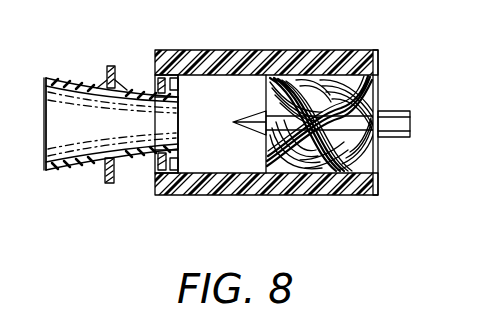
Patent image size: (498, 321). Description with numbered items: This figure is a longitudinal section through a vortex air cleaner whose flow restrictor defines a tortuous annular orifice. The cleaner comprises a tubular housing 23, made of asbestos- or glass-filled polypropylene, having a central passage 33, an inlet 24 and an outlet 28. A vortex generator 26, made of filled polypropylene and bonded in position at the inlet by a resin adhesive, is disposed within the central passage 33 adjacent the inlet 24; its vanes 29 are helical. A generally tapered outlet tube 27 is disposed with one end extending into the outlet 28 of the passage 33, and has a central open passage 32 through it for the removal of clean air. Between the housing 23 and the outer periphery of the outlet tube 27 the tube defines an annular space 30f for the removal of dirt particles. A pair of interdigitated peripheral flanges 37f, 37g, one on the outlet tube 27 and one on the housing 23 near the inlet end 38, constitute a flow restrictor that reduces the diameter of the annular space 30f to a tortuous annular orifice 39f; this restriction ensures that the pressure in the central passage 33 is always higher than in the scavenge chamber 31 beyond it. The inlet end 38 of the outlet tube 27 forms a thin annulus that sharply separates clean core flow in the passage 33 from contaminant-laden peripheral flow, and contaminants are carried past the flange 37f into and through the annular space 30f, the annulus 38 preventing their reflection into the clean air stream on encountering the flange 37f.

The tubular housing 23 is at (335, 185).
The inlet 24 is at (378, 88).
The vortex generator 26 is at (392, 160).
The outlet tube 27 is at (66, 78).
The outlet 28 is at (157, 172).
The vanes 29 is at (330, 88).
The annular space 30f is at (150, 78).
The scavenge chamber 31 is at (73, 246).
The central open passage 32 is at (121, 137).
The central passage 33 is at (240, 106).
The peripheral flange 37f is at (177, 167).
The peripheral flange 37g is at (153, 164).
The inlet end 38 is at (182, 118).
The tortuous annular orifice 39f is at (182, 83).